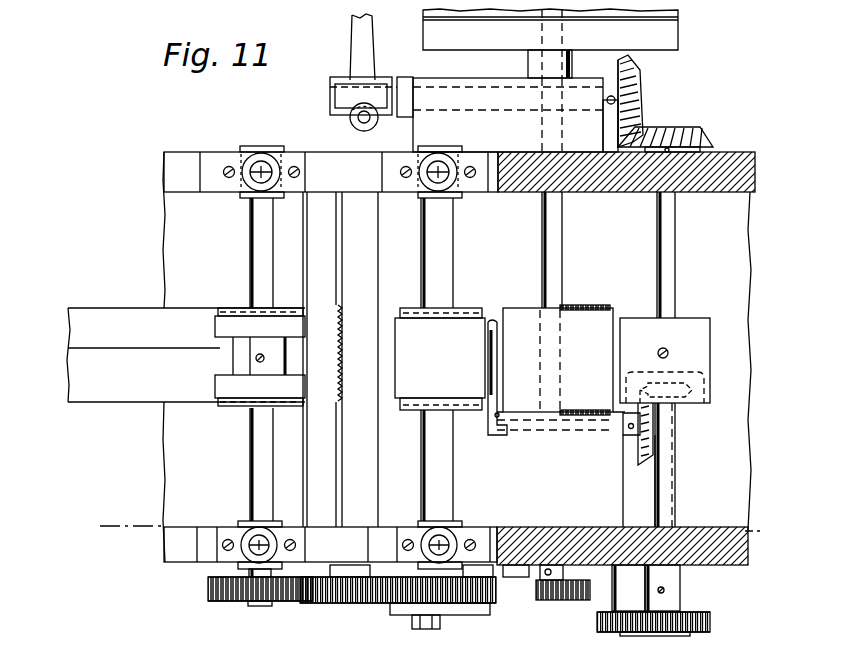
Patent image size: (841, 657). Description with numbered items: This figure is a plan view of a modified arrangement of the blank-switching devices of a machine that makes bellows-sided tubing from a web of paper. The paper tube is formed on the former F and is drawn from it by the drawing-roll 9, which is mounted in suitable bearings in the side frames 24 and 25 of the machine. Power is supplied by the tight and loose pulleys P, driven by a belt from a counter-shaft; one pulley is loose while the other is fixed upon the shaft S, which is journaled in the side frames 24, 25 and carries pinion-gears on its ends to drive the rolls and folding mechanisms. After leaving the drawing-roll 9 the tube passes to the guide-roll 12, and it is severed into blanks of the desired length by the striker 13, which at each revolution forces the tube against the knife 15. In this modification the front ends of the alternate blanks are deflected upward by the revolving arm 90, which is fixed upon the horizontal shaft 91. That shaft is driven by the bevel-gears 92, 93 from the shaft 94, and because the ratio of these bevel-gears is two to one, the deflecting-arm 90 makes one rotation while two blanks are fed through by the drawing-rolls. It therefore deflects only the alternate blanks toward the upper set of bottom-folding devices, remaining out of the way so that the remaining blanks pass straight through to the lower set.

The striker 13 is at (366, 52).
The tight and loose pulleys P is at (665, 33).
The side frame 25 is at (751, 184).
The shaft S is at (552, 226).
The drawing-roll 9 is at (223, 328).
The former F is at (70, 383).
The knife 15 is at (326, 359).
The revolving arm 90 is at (492, 418).
The horizontal shaft 91 is at (580, 415).
The bevel-gear 93 is at (678, 402).
The bevel-gear 92 is at (641, 466).
The shaft 94 is at (668, 475).
The guide-roll 12 is at (792, 539).
The side frame 24 is at (710, 556).